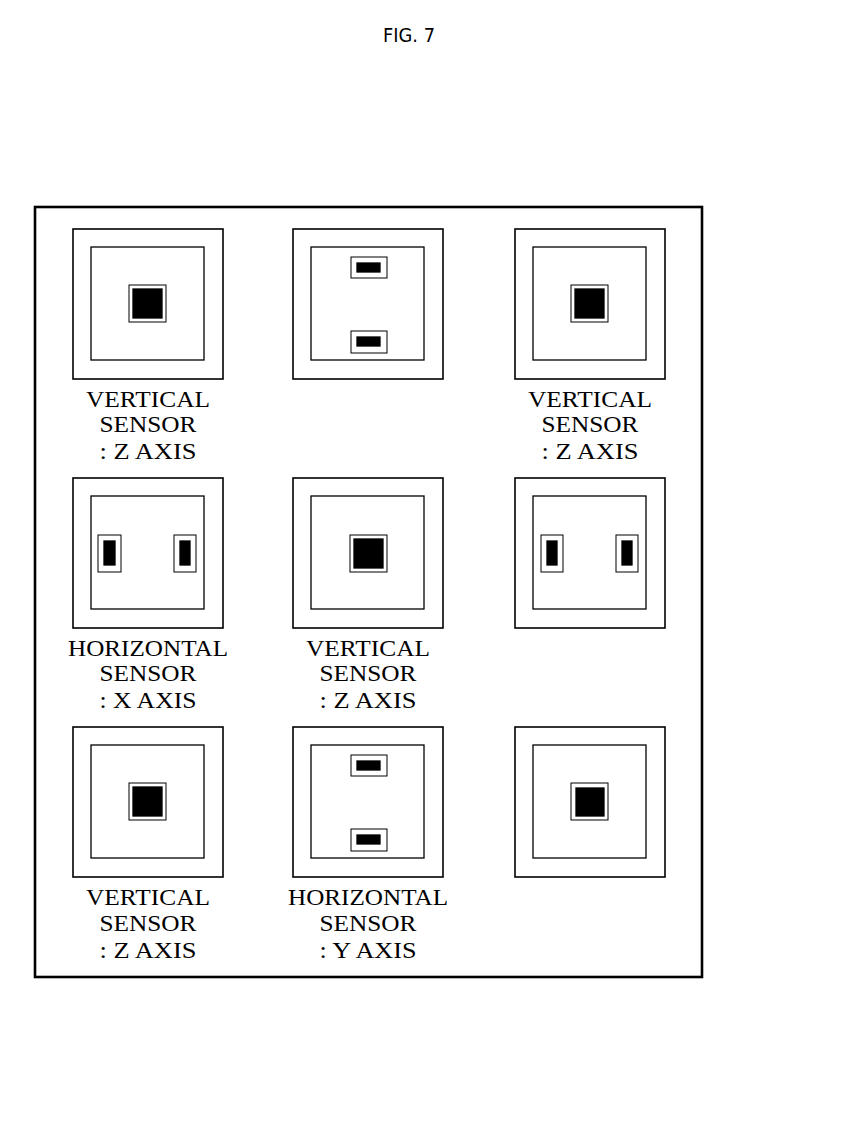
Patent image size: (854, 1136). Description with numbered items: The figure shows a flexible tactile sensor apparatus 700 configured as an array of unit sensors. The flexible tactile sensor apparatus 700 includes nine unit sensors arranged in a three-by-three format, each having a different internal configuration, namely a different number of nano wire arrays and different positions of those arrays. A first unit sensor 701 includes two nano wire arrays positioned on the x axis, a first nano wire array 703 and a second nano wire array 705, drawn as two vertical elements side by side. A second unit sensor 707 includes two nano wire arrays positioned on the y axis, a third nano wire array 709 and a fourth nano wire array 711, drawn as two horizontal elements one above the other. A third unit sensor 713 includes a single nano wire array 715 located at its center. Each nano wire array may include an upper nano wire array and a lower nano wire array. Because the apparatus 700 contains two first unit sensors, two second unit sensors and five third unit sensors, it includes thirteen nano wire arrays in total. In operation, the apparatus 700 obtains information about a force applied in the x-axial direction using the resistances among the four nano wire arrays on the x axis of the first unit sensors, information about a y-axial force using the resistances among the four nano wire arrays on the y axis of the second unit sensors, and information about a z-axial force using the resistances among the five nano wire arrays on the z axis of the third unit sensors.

The flexible tactile sensor apparatus 700 is at (117, 150).
The first unit sensor 701 is at (621, 595).
The first nano wire array 703 is at (548, 548).
The second nano wire array 705 is at (637, 551).
The second unit sensor 707 is at (392, 303).
The third nano wire array 709 is at (387, 341).
The fourth nano wire array 711 is at (387, 266).
The third unit sensor 713 is at (652, 845).
The nano wire array 715 is at (608, 800).